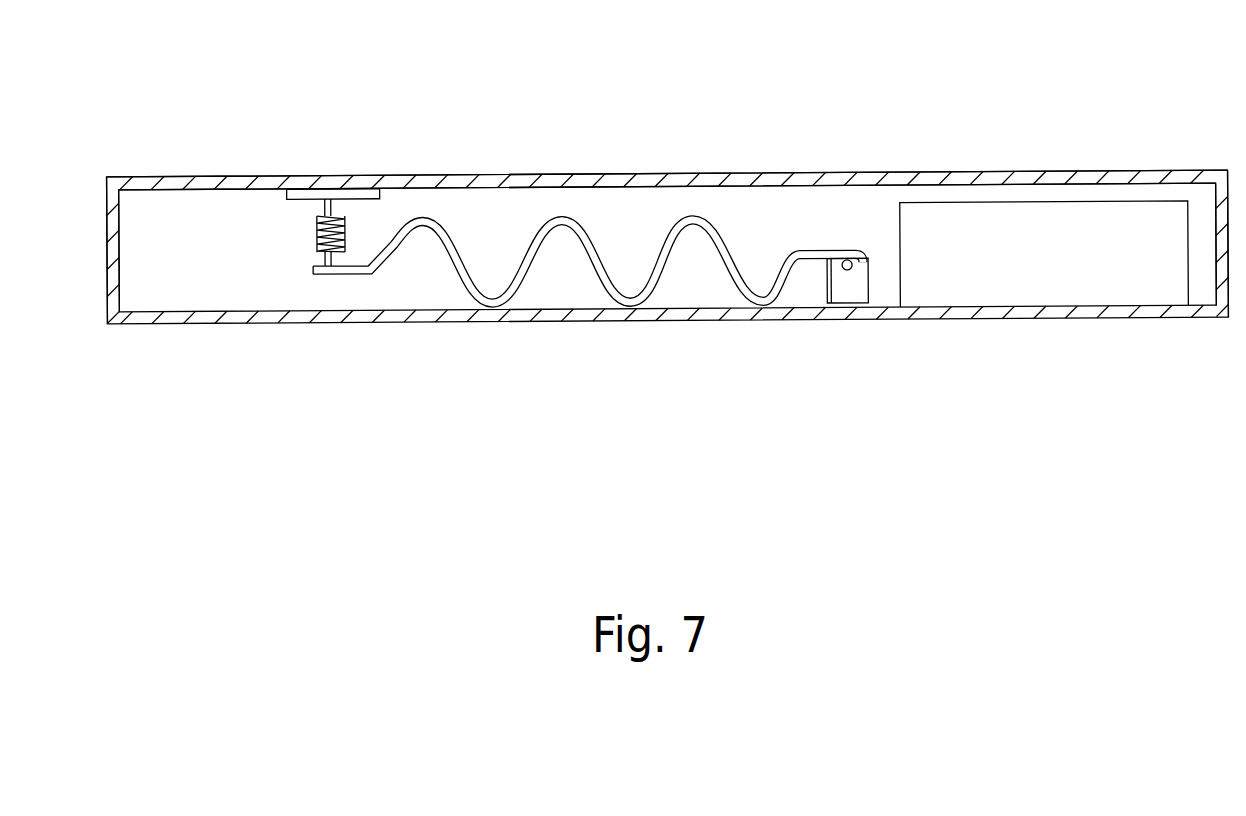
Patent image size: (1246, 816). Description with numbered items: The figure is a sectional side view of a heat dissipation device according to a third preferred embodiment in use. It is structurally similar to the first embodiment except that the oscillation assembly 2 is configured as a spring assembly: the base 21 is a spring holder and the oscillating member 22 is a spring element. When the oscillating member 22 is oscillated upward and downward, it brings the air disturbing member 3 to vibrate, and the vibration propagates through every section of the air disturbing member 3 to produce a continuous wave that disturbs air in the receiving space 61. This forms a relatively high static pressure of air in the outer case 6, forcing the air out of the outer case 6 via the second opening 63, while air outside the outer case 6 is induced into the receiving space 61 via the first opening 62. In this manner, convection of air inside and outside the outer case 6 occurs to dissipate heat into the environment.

The oscillation assembly 2 is at (278, 165).
The base 21 is at (305, 190).
The oscillating member 22 is at (316, 232).
The air disturbing member 3 is at (560, 214).
The outer case 6 is at (1081, 180).
The receiving space 61 is at (848, 197).
The first opening 62 is at (116, 210).
The second opening 63 is at (1220, 198).